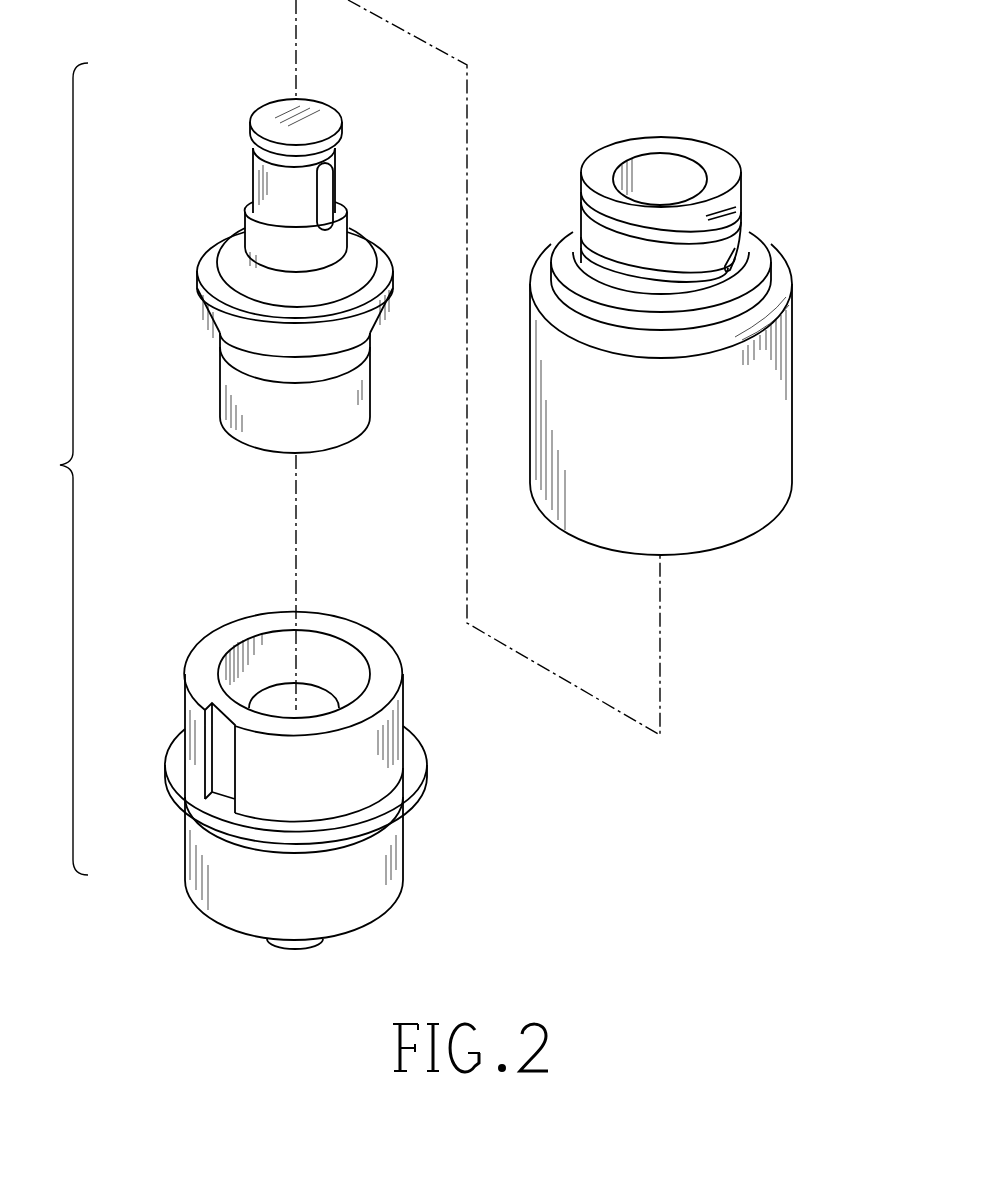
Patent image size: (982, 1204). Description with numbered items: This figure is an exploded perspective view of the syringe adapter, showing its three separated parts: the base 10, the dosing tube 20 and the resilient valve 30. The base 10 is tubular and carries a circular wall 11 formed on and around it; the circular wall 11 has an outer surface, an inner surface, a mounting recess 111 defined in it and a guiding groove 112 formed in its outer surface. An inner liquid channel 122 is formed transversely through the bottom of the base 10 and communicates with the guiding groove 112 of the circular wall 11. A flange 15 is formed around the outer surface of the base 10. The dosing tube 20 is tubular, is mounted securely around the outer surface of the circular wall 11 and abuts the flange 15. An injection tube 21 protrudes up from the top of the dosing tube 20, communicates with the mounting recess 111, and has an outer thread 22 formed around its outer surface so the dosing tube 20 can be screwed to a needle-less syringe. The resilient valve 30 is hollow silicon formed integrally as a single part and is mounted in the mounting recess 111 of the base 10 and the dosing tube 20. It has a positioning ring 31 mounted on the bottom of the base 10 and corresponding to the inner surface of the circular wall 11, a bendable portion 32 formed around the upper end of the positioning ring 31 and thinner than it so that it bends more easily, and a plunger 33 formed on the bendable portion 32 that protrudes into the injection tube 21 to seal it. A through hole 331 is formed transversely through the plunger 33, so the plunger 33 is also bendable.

The base 10 is at (390, 892).
The circular wall 11 is at (387, 722).
The mounting recess 111 is at (322, 658).
The guiding groove 112 is at (220, 737).
The inner liquid channel 122 is at (222, 800).
The flange 15 is at (410, 805).
The dosing tube 20 is at (777, 440).
The injection tube 21 is at (703, 155).
The outer thread 22 is at (730, 237).
The resilient valve 30 is at (206, 152).
The positioning ring 31 is at (232, 390).
The bendable portion 32 is at (232, 265).
The plunger 33 is at (317, 107).
The through hole 331 is at (323, 180).